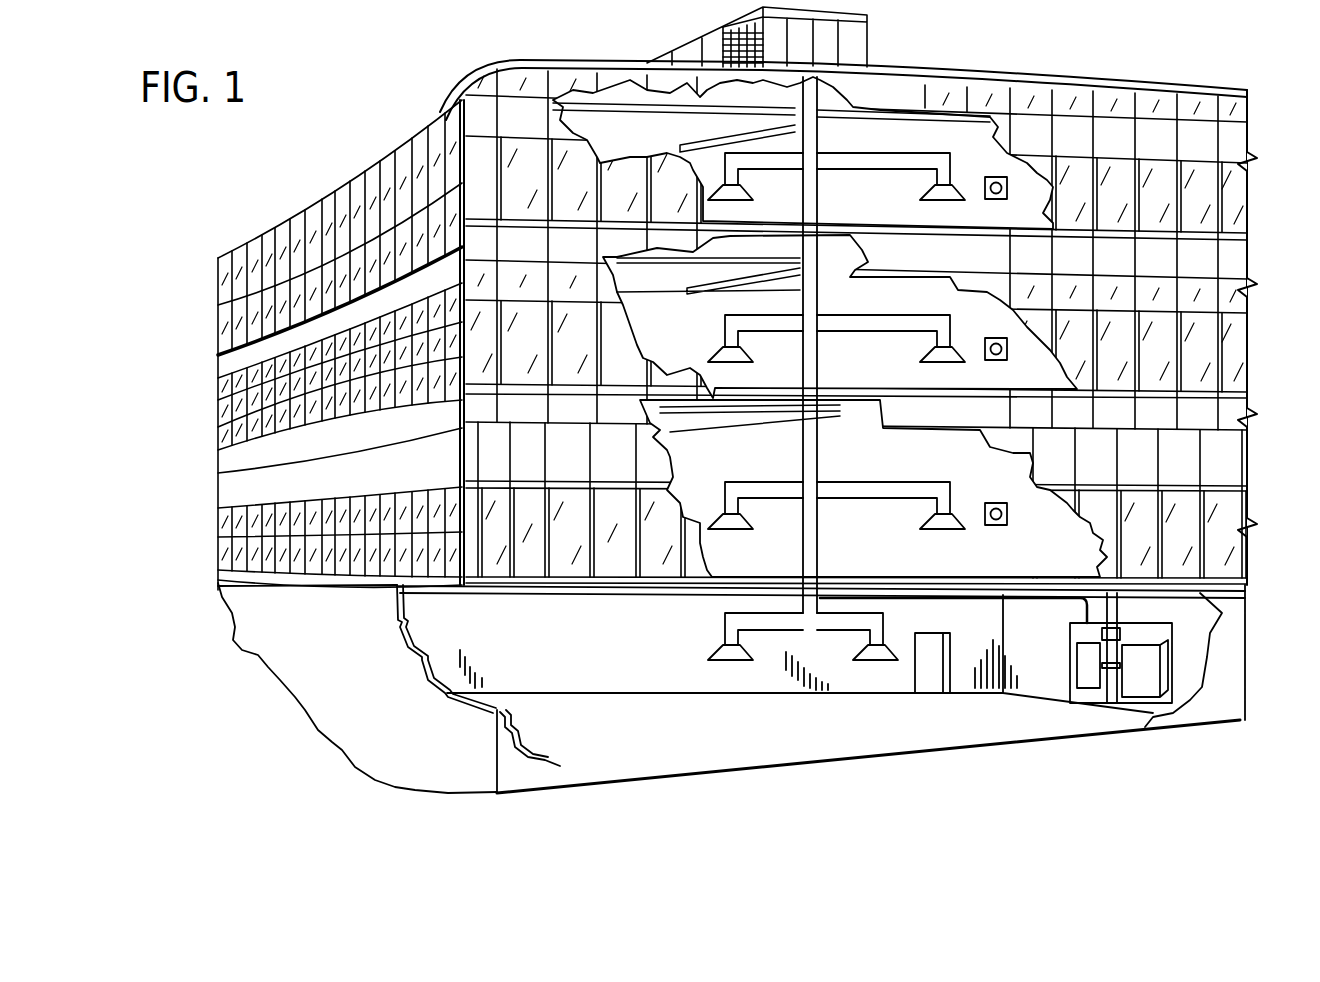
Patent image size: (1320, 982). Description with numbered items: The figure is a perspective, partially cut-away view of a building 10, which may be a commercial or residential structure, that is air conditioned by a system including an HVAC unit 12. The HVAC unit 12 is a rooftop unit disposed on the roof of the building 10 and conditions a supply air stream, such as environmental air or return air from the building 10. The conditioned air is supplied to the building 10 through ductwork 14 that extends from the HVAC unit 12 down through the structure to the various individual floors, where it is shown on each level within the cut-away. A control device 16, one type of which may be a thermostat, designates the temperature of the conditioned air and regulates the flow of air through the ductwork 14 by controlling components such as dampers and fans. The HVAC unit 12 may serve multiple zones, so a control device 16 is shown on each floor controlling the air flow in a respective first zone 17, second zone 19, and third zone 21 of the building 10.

The building 10 is at (1117, 86).
The HVAC unit 12 is at (728, 26).
The ductwork 14 is at (820, 203).
The control device 16 is at (995, 200).
The first zone 17 is at (980, 157).
The second zone 19 is at (925, 375).
The third zone 21 is at (1005, 483).